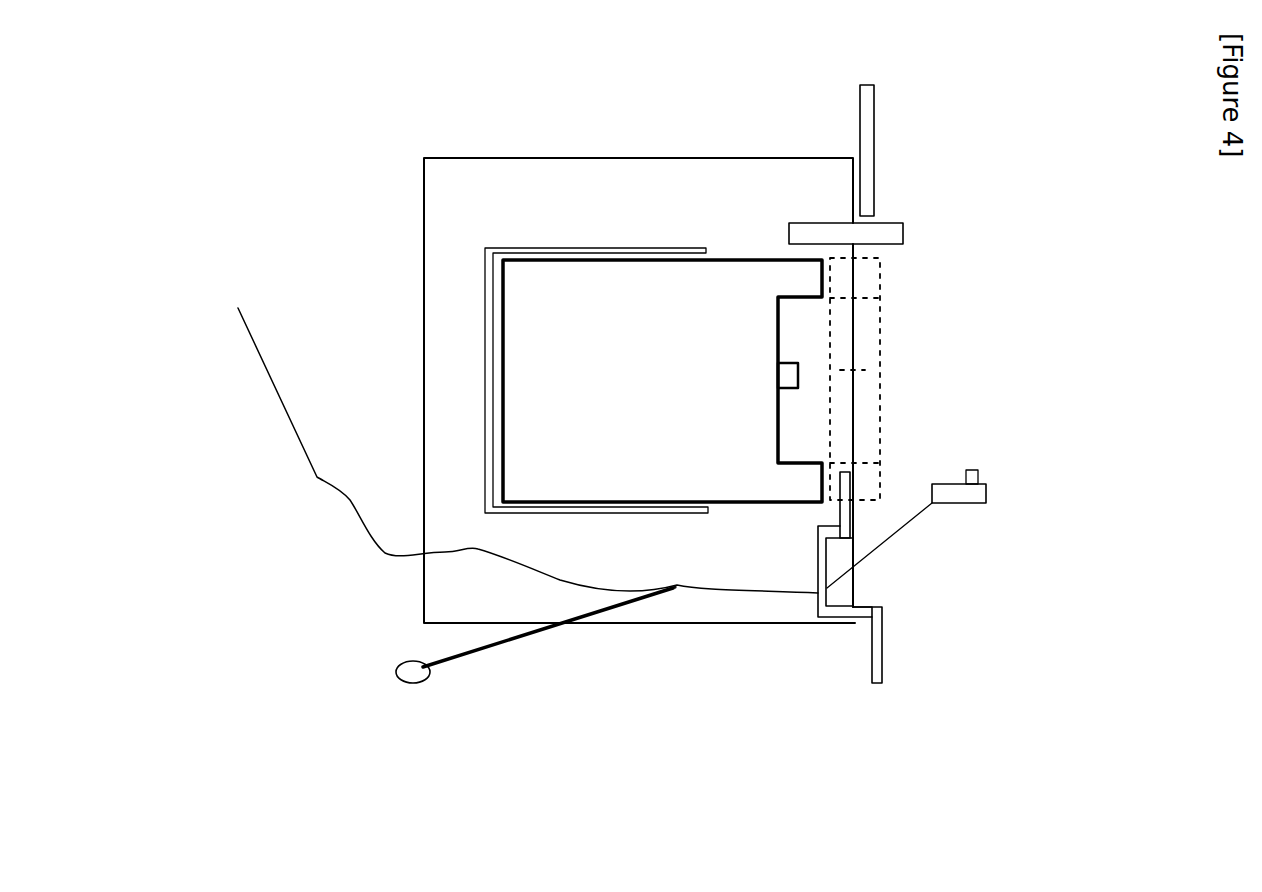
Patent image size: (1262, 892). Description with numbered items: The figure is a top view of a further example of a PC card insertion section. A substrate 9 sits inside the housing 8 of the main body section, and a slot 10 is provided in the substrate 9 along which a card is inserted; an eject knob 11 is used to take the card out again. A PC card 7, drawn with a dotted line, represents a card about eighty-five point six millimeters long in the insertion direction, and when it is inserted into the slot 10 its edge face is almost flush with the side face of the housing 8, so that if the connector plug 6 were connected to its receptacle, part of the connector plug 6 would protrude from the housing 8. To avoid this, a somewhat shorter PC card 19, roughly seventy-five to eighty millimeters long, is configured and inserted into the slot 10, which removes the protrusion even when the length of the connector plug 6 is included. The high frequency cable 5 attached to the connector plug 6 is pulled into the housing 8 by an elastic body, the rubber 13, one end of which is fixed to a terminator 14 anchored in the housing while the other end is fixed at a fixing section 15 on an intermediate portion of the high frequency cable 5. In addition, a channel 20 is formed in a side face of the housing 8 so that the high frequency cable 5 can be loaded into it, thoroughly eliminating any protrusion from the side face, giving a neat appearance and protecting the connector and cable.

The high frequency cable 5 is at (327, 482).
The connector plug 6 is at (977, 495).
The PC card 7 is at (873, 290).
The housing 8 is at (866, 135).
The substrate 9 is at (665, 195).
The slot 10 is at (565, 250).
The eject knob 11 is at (878, 232).
The rubber 13 is at (480, 650).
The terminator 14 is at (418, 675).
The fixing section 15 is at (675, 605).
The PC card 19 is at (748, 280).
The channel 20 is at (855, 488).